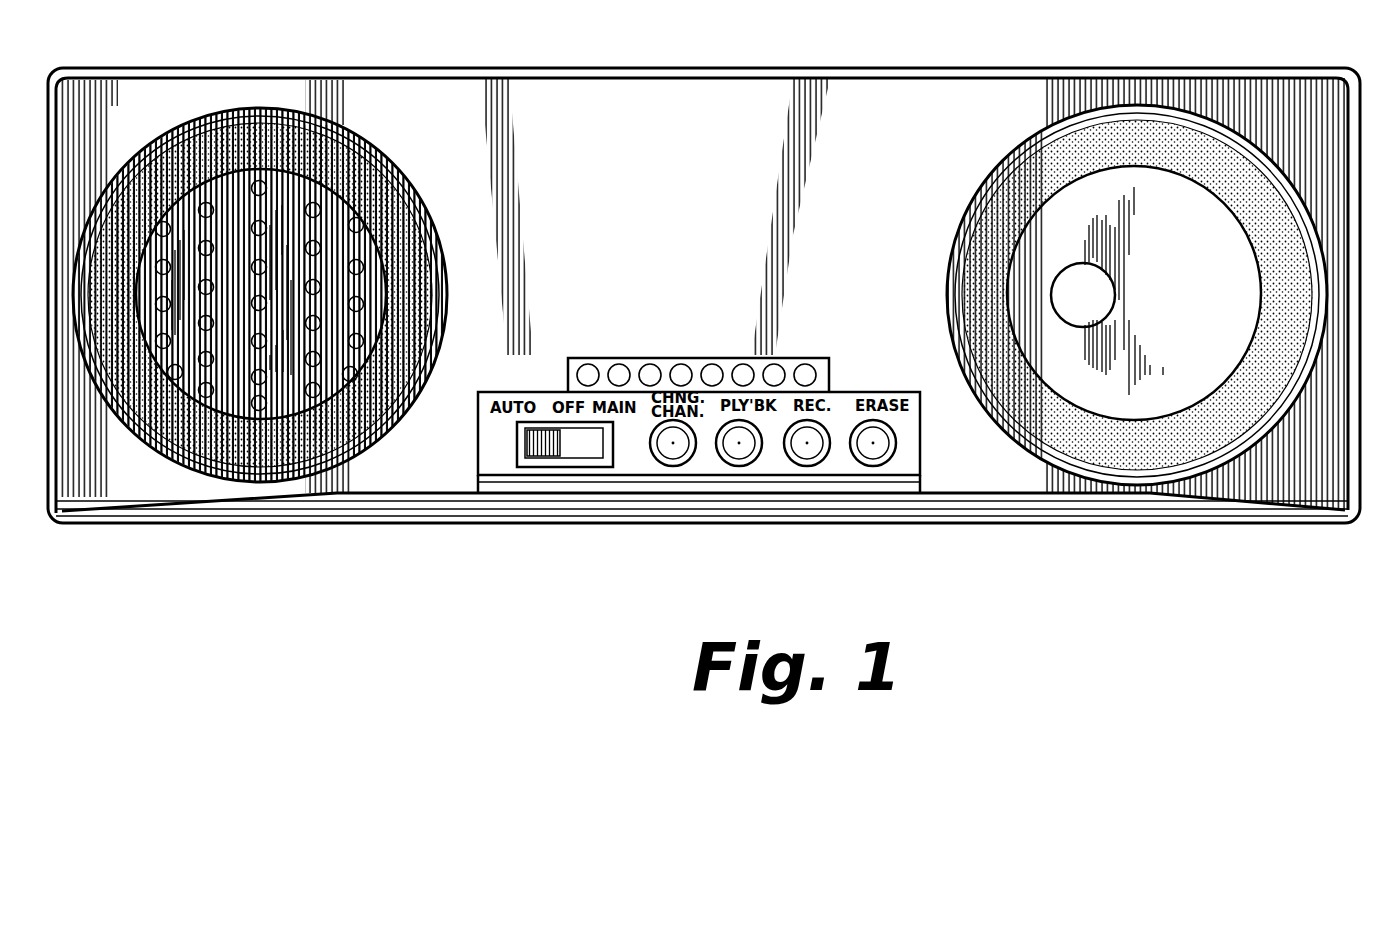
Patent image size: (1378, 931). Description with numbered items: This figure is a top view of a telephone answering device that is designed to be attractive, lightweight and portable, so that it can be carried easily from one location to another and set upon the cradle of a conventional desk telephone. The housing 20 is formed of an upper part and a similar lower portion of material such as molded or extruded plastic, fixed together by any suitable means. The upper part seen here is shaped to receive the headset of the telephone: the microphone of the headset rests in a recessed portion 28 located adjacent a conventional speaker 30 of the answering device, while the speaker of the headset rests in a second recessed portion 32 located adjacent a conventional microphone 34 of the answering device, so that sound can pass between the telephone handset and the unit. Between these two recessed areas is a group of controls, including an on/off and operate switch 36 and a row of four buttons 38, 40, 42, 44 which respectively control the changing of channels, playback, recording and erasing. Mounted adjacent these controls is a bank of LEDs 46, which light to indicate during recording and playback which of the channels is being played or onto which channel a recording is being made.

The housing 20 is at (457, 529).
The recessed portion 28 is at (217, 463).
The speaker 30 is at (338, 212).
The recessed portion 32 is at (1158, 105).
The microphone 34 is at (1097, 177).
The on/off and operate switch 36 is at (563, 460).
The button 38 is at (676, 466).
The button 40 is at (745, 465).
The button 42 is at (815, 466).
The button 44 is at (880, 466).
The bank of LEDs 46 is at (698, 352).